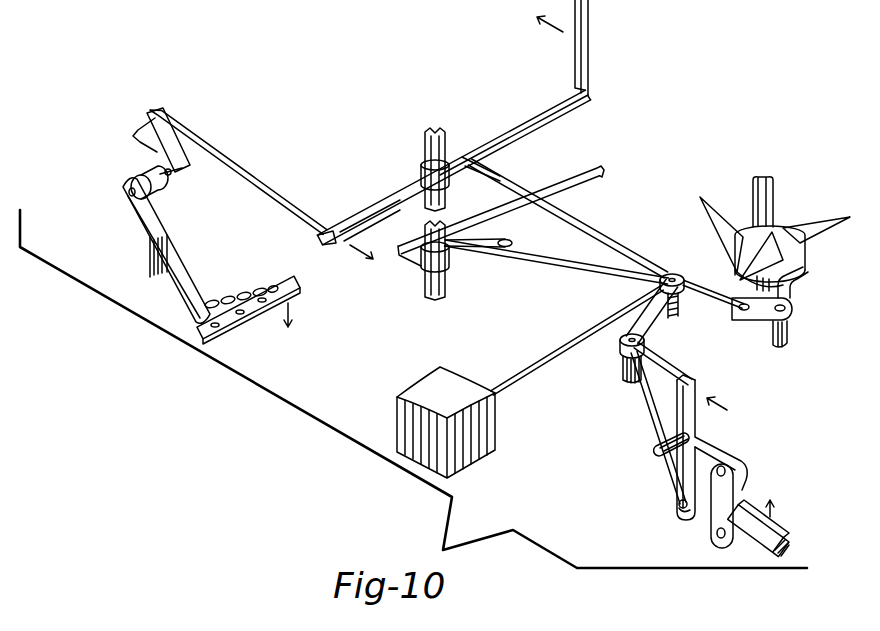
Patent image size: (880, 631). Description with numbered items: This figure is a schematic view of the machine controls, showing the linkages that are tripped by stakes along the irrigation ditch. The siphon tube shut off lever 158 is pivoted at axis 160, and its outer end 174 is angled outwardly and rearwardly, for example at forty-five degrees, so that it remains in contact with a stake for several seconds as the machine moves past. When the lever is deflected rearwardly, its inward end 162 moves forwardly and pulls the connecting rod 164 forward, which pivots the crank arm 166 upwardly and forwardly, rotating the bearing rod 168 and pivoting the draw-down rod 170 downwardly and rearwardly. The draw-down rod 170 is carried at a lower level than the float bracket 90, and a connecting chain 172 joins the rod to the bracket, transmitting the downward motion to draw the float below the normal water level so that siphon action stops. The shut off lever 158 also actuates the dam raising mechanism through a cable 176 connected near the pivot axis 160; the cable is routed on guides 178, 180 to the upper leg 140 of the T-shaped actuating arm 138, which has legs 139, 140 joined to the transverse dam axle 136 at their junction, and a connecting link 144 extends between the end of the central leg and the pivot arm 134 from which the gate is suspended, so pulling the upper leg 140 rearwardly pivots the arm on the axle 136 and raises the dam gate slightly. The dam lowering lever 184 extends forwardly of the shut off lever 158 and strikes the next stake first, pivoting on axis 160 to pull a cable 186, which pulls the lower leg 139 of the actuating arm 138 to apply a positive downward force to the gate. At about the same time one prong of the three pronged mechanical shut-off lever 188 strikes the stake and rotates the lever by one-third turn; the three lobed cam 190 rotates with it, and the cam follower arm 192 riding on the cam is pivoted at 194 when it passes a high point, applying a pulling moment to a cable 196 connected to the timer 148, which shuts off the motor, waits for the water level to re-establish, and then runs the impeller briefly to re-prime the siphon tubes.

The float bracket 90 is at (238, 320).
The pivot arm 134 is at (770, 530).
The transverse dam axle 136 is at (660, 460).
The T-shaped actuating arm 138 is at (705, 433).
The lower leg 139 is at (678, 510).
The upper leg 140 is at (696, 383).
The connecting link 144 is at (733, 500).
The timer 148 is at (446, 422).
The siphon tube shut off lever 158 is at (514, 114).
The pivot axis 160 is at (425, 145).
The inward end 162 is at (378, 204).
The connecting rod 164 is at (282, 192).
The crank arm 166 is at (178, 177).
The bearing rod 168 is at (159, 200).
The draw-down rod 170 is at (178, 276).
The connecting chain 172 is at (242, 292).
The outer end 174 is at (590, 14).
The cable 176 is at (606, 239).
The guide 178 is at (680, 271).
The guide 180 is at (622, 348).
The dam lowering lever 184 is at (516, 212).
The cable 186 is at (521, 250).
The three pronged mechanical shut-off lever 188 is at (807, 215).
The three lobed cam 190 is at (806, 263).
The cam follower arm 192 is at (794, 300).
The pivot 194 is at (786, 340).
The cable 196 is at (715, 299).